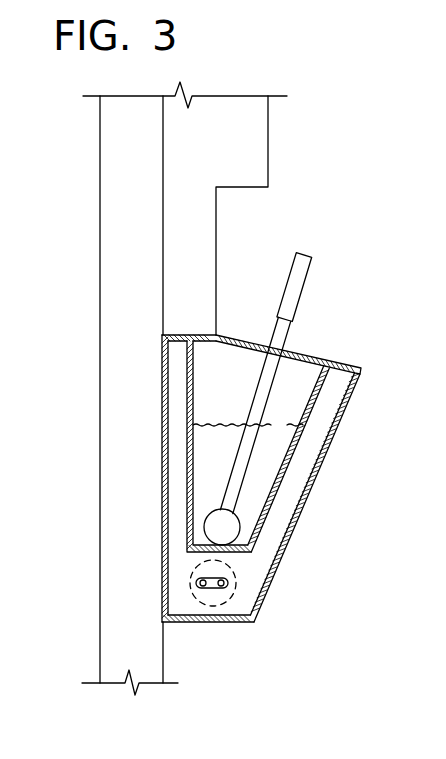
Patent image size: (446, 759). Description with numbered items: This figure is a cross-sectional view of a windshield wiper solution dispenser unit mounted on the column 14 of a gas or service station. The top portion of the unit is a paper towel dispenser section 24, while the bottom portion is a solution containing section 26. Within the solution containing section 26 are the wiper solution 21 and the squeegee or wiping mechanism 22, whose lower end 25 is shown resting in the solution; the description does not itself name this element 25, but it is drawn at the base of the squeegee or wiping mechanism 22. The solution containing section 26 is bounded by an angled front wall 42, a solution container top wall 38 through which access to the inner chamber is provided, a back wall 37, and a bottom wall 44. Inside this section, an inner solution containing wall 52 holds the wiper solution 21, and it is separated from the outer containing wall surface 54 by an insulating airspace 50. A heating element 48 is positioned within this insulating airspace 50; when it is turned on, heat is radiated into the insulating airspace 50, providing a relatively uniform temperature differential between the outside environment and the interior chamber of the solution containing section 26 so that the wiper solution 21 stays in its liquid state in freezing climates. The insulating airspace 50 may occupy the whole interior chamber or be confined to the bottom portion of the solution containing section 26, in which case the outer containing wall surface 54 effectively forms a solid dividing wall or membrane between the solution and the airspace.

The column 14 is at (117, 354).
The wiper solution 21 is at (215, 422).
The squeegee or wiping mechanism 22 is at (292, 300).
The paper towel dispenser section 24 is at (251, 153).
The ball tip 25 is at (204, 528).
The solution containing section 26 is at (315, 480).
The back wall 37 is at (158, 445).
The solution container top wall 38 is at (320, 362).
The angled front wall 42 is at (323, 462).
The bottom wall 44 is at (226, 622).
The heating element 48 is at (228, 586).
The insulating airspace 50 is at (288, 503).
The inner solution containing wall 52 is at (270, 520).
The outer containing wall surface 54 is at (233, 555).